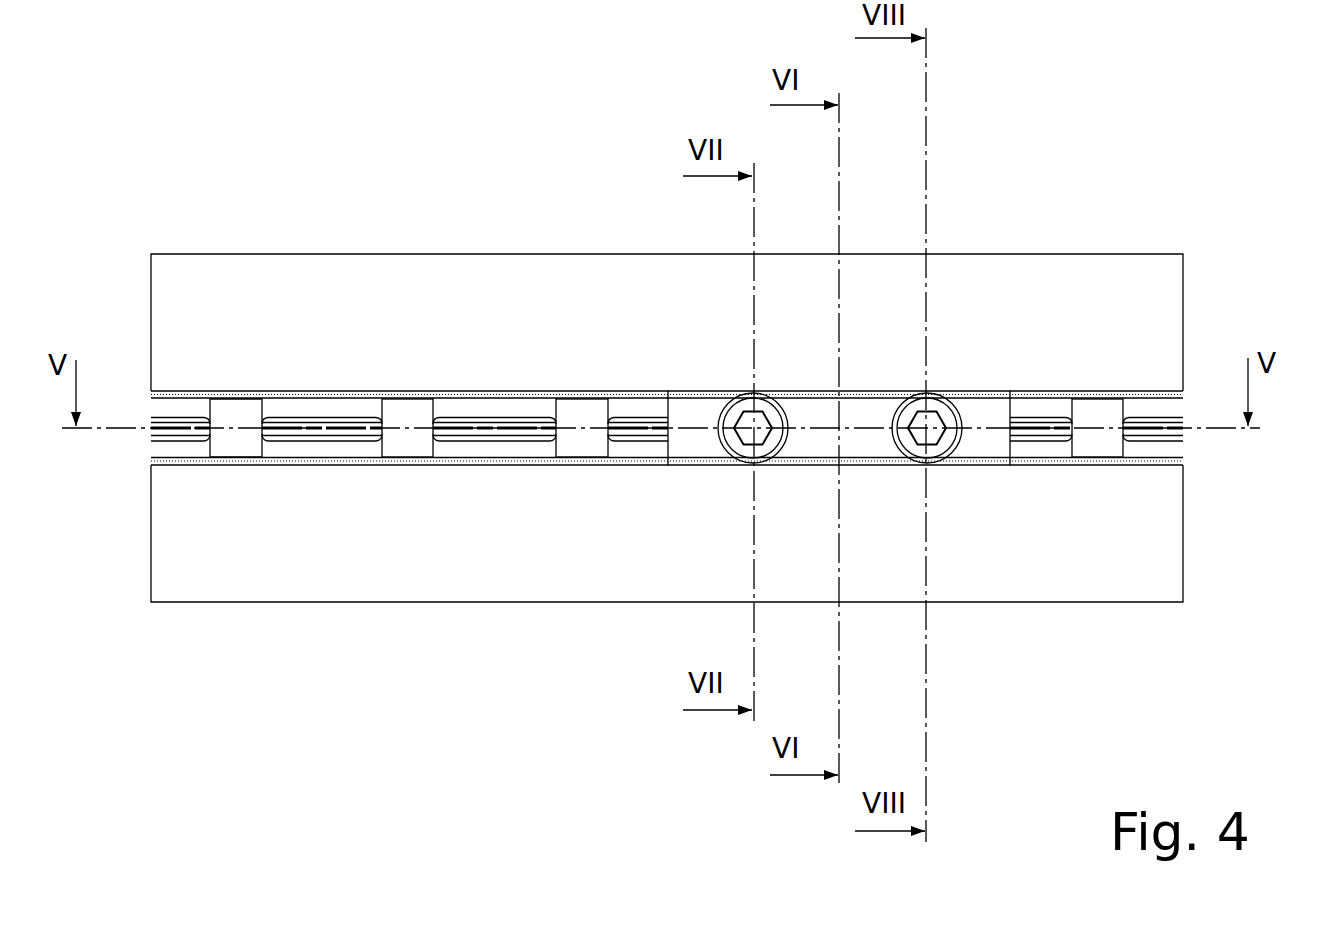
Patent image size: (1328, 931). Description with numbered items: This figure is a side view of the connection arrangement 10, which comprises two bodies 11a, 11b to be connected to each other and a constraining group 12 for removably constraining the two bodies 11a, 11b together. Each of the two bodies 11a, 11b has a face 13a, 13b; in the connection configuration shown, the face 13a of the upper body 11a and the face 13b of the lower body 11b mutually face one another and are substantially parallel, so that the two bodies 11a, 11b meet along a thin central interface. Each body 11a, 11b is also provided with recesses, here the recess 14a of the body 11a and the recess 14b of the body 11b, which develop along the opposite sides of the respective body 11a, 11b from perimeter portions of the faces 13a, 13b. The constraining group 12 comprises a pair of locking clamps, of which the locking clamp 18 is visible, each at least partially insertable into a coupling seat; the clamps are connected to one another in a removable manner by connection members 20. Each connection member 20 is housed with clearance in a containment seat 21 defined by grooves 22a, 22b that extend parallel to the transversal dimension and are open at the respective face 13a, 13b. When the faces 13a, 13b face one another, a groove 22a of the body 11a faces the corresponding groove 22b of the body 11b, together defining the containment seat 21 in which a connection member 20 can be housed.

The connection arrangement 10 is at (1180, 130).
The body 11a is at (1186, 282).
The body 11b is at (1186, 595).
The constraining group 12 is at (975, 480).
The face 13a is at (343, 418).
The face 13b is at (308, 441).
The recess 14a is at (1178, 402).
The recess 14b is at (1186, 455).
The locking clamp 18 is at (987, 405).
The connection member 20 is at (723, 458).
The containment seat 21 is at (403, 414).
The groove 22a is at (235, 399).
The groove 22b is at (254, 458).